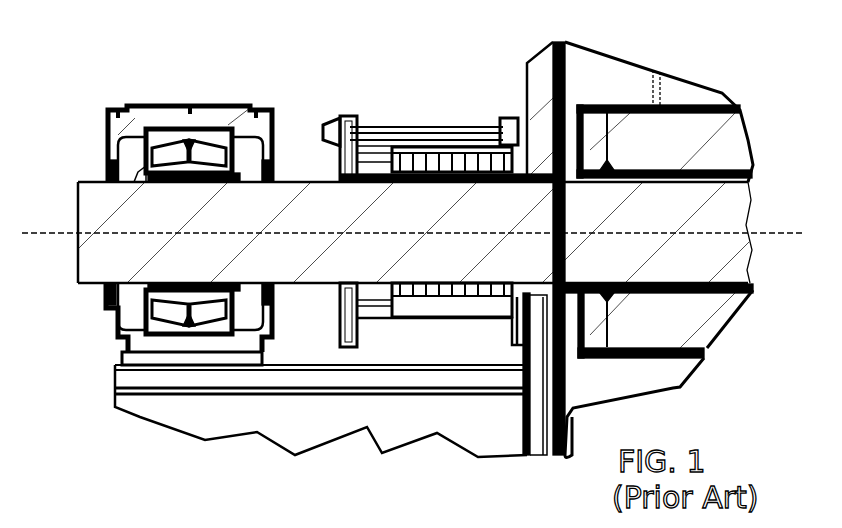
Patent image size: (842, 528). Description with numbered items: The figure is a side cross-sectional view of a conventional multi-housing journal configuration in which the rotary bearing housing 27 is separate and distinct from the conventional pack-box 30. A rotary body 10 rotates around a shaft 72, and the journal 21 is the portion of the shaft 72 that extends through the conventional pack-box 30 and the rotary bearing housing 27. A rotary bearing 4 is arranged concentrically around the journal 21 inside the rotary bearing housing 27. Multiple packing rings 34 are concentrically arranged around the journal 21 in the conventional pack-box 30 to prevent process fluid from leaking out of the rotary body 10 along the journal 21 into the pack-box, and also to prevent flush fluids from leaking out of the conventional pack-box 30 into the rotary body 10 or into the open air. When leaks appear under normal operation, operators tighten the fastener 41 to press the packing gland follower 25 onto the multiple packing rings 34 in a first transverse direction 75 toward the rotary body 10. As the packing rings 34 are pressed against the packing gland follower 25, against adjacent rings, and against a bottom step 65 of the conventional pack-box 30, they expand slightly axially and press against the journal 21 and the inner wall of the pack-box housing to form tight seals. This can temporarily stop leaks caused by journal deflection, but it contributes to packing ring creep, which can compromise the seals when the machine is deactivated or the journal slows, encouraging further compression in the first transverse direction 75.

The rotary bearing 4 is at (142, 167).
The rotary body 10 is at (647, 358).
The journal 21 is at (95, 262).
The packing gland follower 25 is at (347, 347).
The rotary bearing housing 27 is at (160, 106).
The conventional pack-box 30 is at (427, 317).
The packing rings 34 is at (427, 163).
The fastener 41 is at (328, 123).
The bottom step 65 is at (543, 300).
The shaft 72 is at (653, 295).
The first transverse direction 75 is at (322, 318).